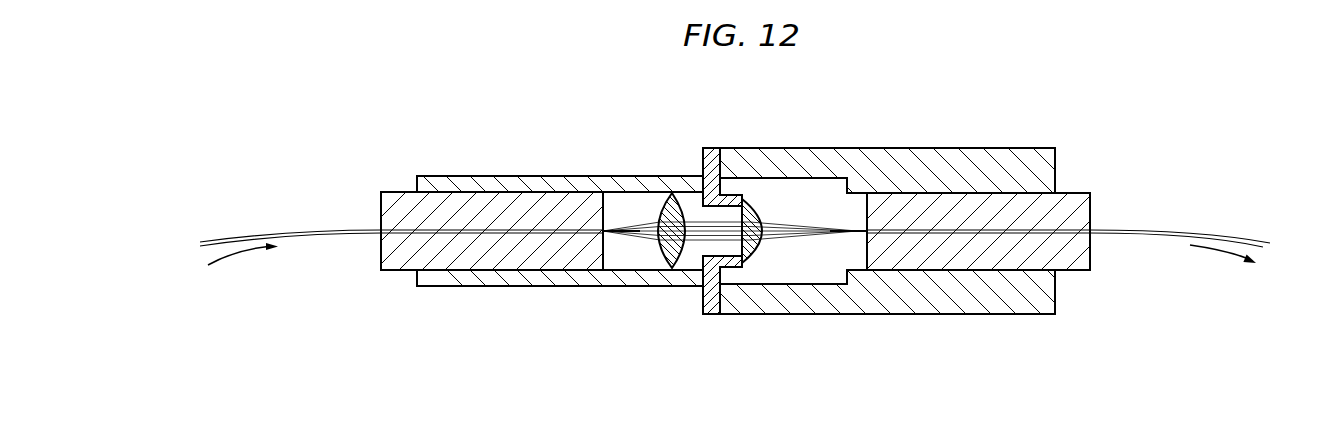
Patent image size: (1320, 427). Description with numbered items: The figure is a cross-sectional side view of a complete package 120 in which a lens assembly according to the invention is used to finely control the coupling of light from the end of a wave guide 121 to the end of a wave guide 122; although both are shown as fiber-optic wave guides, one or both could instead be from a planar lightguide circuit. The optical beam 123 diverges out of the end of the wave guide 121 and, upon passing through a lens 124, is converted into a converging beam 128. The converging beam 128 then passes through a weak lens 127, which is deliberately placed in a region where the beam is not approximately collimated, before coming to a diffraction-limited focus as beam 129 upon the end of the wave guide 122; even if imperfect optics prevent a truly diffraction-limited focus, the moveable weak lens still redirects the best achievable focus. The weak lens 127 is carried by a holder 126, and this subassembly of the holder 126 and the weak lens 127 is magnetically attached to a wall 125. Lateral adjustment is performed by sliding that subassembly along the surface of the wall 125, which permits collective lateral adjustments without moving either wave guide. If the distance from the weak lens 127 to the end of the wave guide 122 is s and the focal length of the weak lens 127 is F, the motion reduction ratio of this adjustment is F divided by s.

The optical collimator assembly 120 is at (821, 406).
The wave guide 121 is at (539, 230).
The wave guide 122 is at (930, 232).
The optical beam 123 is at (640, 232).
The lens 124 is at (670, 197).
The wall 125 is at (710, 152).
The holder 126 is at (735, 193).
The weak lens 127 is at (753, 198).
The converging beam 128 is at (716, 240).
The beam 129 is at (808, 233).